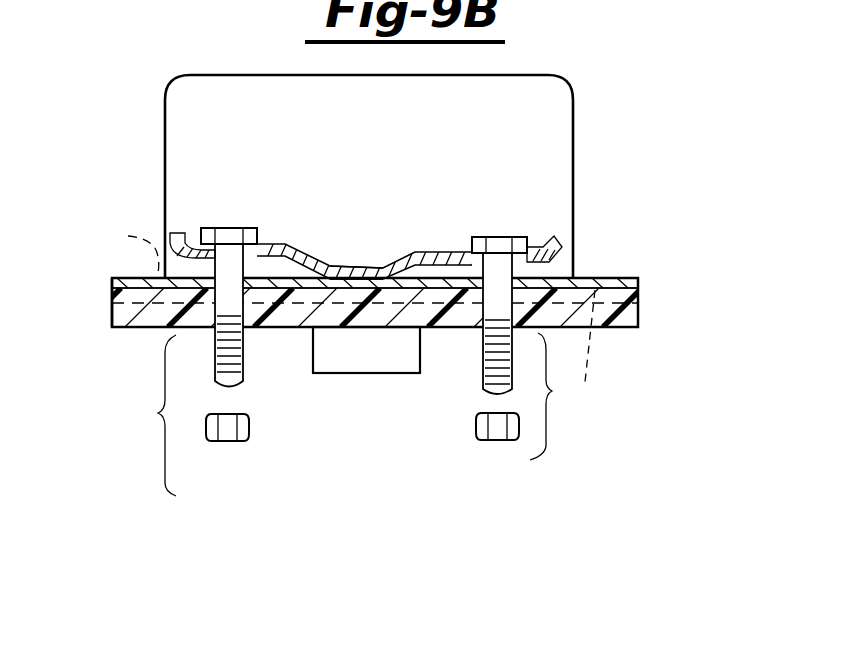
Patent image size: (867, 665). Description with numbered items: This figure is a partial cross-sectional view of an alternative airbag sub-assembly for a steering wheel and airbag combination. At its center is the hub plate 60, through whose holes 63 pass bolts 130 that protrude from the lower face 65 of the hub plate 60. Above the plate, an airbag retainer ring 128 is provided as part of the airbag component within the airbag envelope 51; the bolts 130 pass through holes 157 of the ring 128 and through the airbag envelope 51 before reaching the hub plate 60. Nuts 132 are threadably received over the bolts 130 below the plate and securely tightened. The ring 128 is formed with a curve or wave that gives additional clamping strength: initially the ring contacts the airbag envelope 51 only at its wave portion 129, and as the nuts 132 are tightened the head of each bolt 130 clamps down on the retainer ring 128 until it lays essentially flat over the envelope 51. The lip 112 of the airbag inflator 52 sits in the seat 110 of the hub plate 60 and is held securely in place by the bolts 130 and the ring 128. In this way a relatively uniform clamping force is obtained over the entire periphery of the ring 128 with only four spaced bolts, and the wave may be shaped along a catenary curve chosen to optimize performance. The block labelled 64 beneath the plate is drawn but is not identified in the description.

The airbag envelope 51 is at (620, 279).
The airbag inflator 52 is at (404, 131).
The hub plate 60 is at (619, 332).
The holes 63 is at (232, 314).
The spacer block 64 is at (392, 363).
The lower face 65 is at (142, 328).
The seat 110 is at (345, 318).
The lip 112 is at (572, 278).
The airbag retainer ring 128 is at (396, 263).
The wave portion 129 is at (354, 262).
The bolts 130 is at (227, 240).
The nuts 132 is at (229, 441).
The holes 157 is at (214, 232).